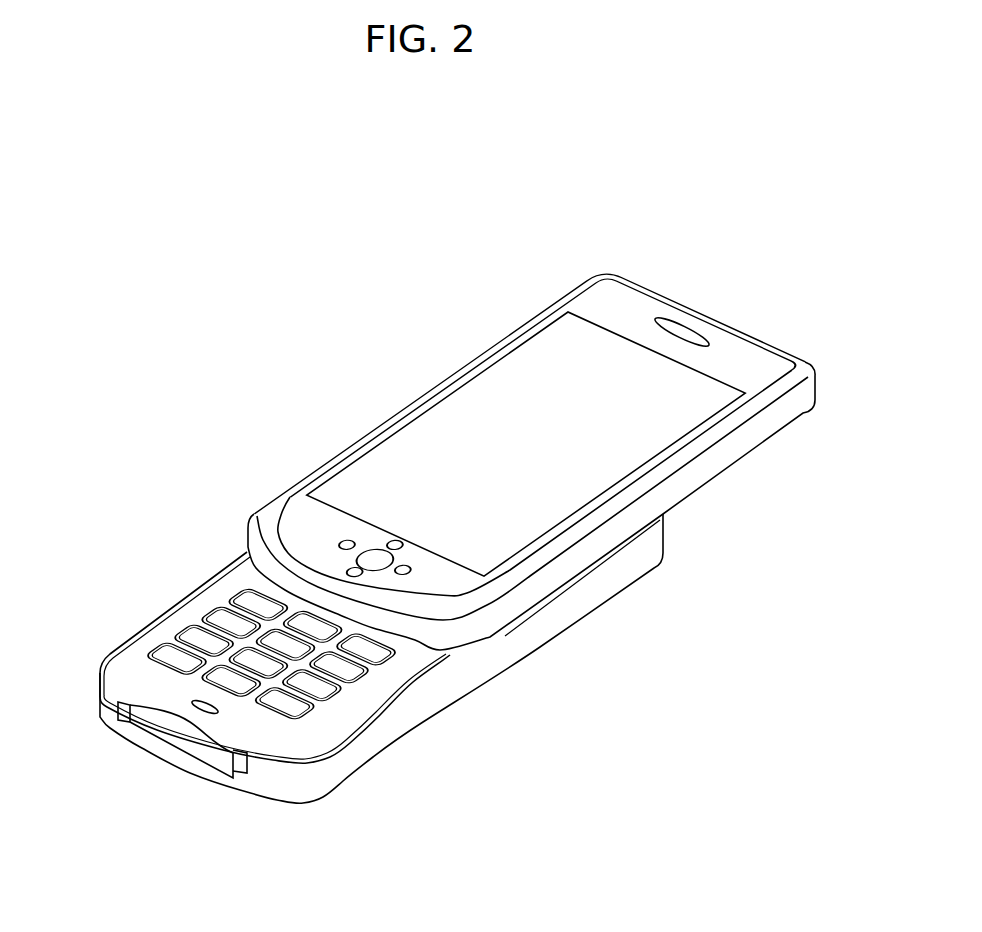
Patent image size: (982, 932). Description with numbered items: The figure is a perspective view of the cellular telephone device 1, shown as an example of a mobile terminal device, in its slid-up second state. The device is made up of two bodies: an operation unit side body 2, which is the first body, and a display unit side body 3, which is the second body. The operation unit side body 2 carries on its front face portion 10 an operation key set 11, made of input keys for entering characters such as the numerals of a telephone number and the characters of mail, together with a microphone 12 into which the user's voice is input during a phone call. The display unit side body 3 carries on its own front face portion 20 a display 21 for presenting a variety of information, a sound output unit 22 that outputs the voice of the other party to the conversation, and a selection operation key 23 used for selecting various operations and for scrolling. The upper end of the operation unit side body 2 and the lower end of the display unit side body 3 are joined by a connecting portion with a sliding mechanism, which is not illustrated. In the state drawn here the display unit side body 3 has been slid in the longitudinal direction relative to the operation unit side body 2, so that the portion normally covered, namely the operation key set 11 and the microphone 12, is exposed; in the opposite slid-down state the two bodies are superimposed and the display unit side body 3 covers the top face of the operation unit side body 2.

The cellular telephone device 1 is at (656, 190).
The operation unit side body 2 is at (427, 708).
The display unit side body 3 is at (620, 293).
The front face portion 10 is at (145, 665).
The operation key set 11 is at (245, 597).
The microphone 12 is at (205, 712).
The front face portion 20 is at (765, 355).
The display 21 is at (520, 378).
The sound output unit 22 is at (682, 330).
The selection operation key 23 is at (363, 537).